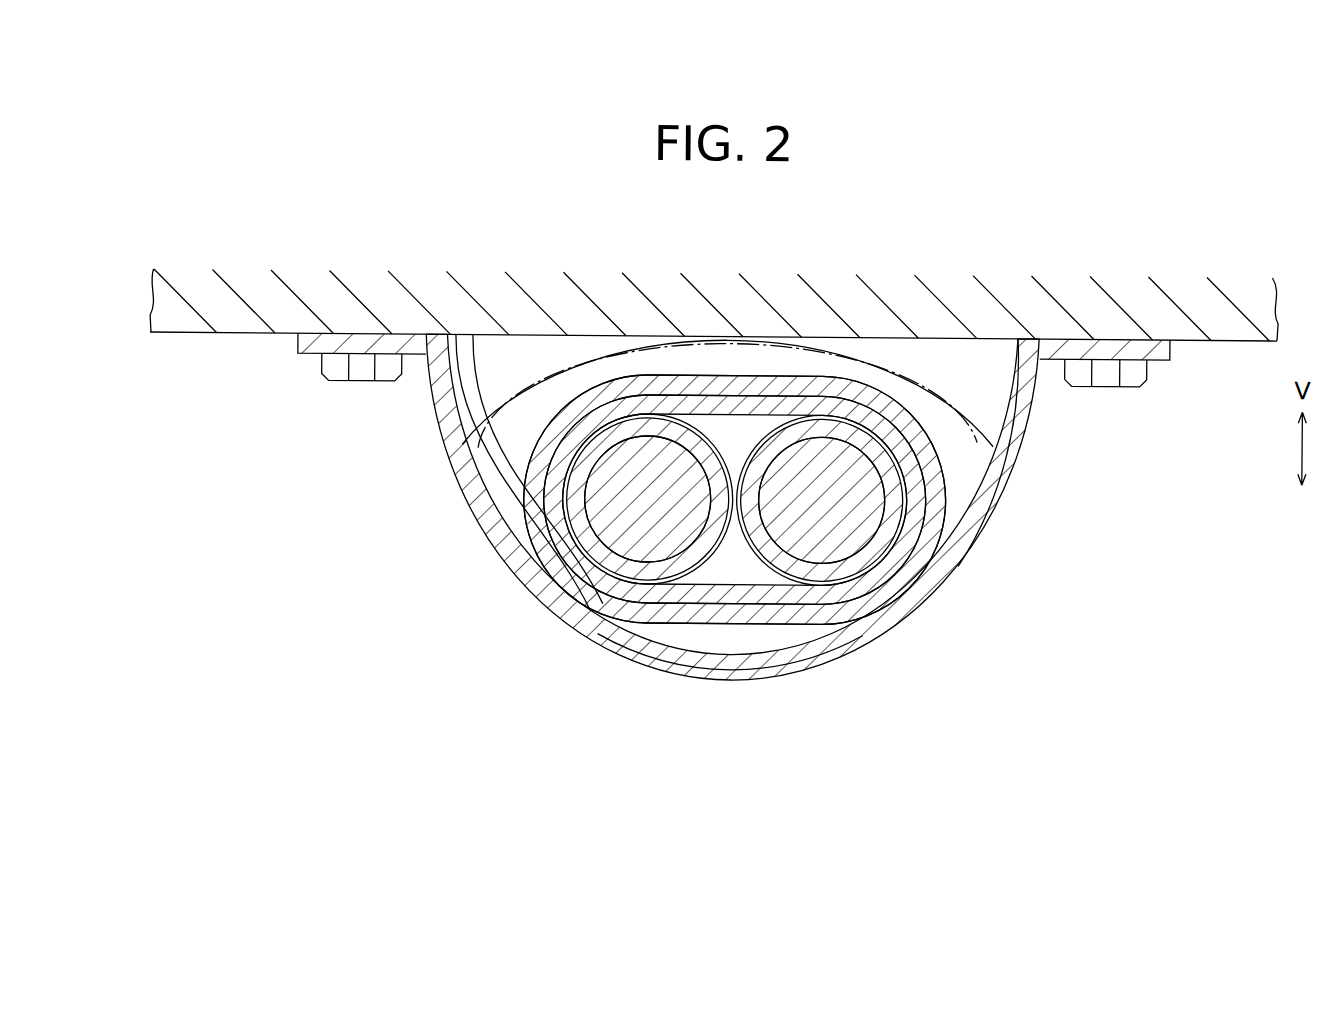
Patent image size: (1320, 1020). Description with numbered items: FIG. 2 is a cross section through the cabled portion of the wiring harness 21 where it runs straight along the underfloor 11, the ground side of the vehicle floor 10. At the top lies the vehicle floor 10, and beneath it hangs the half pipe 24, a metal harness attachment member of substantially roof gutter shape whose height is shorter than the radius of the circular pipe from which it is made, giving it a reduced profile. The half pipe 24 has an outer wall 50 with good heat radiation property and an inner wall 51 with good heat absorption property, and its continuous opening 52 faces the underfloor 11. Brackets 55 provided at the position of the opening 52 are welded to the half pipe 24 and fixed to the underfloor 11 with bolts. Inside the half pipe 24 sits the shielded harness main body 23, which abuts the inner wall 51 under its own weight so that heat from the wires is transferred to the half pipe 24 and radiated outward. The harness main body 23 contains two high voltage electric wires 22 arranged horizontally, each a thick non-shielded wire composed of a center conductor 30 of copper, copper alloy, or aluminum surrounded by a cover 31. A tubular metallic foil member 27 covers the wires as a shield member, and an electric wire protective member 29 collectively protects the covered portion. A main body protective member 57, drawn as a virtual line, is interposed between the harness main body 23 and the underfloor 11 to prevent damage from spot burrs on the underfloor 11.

The vehicle floor 10 is at (1167, 302).
The underfloor 11 is at (1230, 334).
The wiring harness 21 is at (737, 562).
The high voltage electric wire 22 is at (738, 507).
The harness main body 23 is at (781, 620).
The half pipe 24 is at (722, 665).
The tubular metallic foil member 27 is at (670, 591).
The electric wire protective member 29 is at (630, 609).
The center conductor 30 is at (597, 481).
The cover 31 is at (585, 545).
The outer wall 50 is at (696, 496).
The inner wall 51 is at (461, 387).
The opening 52 is at (960, 354).
The bracket 55 is at (353, 340).
The main body protective member 57 is at (787, 348).